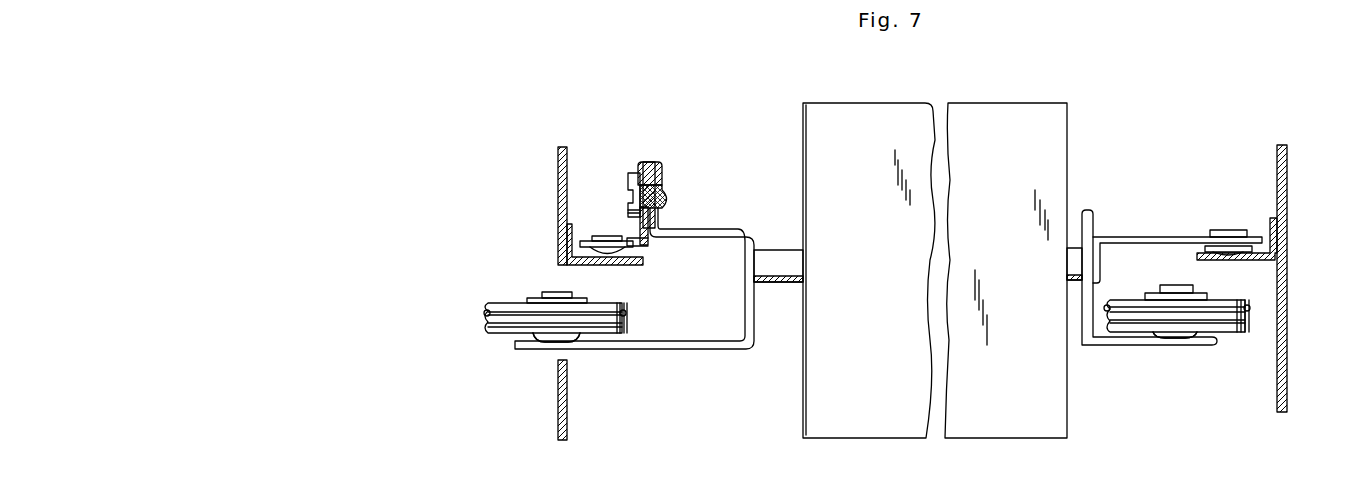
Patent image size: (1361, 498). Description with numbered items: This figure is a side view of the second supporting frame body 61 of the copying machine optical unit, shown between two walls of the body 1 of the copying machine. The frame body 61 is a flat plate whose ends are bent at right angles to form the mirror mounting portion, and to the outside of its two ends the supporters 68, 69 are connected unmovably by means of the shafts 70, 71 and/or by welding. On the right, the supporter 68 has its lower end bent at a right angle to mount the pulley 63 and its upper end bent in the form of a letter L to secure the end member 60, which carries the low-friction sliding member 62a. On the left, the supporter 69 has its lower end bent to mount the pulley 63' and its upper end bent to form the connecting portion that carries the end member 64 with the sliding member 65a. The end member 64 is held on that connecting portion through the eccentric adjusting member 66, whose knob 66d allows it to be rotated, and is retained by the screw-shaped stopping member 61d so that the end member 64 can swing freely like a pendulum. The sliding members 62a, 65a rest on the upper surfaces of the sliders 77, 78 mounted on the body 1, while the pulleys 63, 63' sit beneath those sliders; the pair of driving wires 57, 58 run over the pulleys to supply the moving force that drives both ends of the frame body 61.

The body of the copying machine 1 is at (553, 163).
The driving wire 57 is at (1250, 308).
The driving wire 58 is at (488, 312).
The end member 60 is at (1145, 237).
The second supporting frame body 61 is at (907, 112).
The screw-shaped stopping member 61d is at (630, 176).
The sliding member 62a is at (1227, 246).
The pulley 63 is at (1196, 355).
The pulley 63' is at (521, 357).
The end member 64 is at (648, 240).
The sliding member 65a is at (605, 240).
The adjusting member 66 is at (648, 161).
The knob 66d is at (650, 160).
The supporter 68 is at (1112, 346).
The supporter 69 is at (653, 350).
The shaft 70 is at (1073, 253).
The shaft 71 is at (770, 257).
The slider 77 is at (638, 266).
The slider 78 is at (1245, 260).